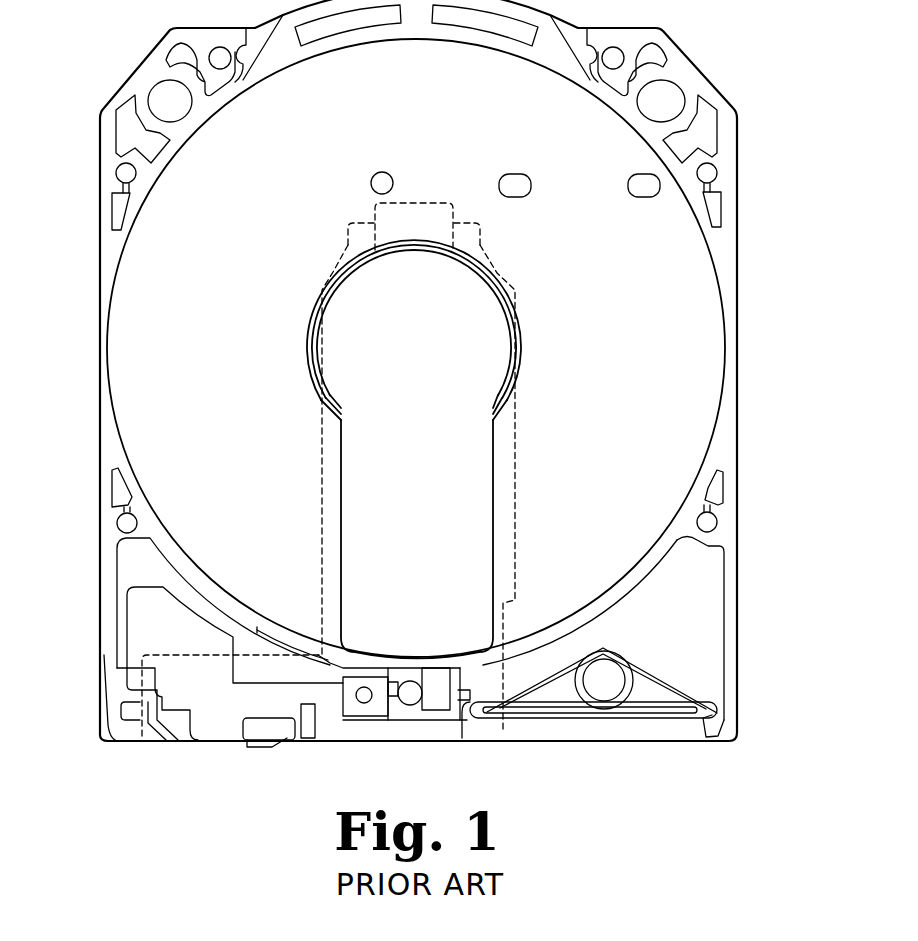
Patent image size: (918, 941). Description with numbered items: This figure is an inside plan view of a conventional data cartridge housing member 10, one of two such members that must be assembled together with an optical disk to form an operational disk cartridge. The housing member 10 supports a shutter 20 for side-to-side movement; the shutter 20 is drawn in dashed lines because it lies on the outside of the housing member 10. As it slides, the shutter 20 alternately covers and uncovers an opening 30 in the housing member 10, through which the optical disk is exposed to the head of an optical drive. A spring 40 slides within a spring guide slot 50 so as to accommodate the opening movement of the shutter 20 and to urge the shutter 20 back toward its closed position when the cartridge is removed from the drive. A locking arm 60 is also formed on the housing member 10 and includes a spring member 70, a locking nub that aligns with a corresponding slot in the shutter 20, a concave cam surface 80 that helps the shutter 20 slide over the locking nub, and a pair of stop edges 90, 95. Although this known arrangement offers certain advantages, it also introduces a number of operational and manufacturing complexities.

The housing member 10 is at (100, 262).
The shutter 20 is at (515, 481).
The opening 30 is at (341, 470).
The spring 40 is at (688, 680).
The spring guide slot 50 is at (580, 718).
The locking arm 60 is at (200, 611).
The spring member 70 is at (323, 664).
The concave cam surface 80 is at (284, 744).
The stop edge 90 is at (128, 704).
The stop edge 95 is at (176, 600).